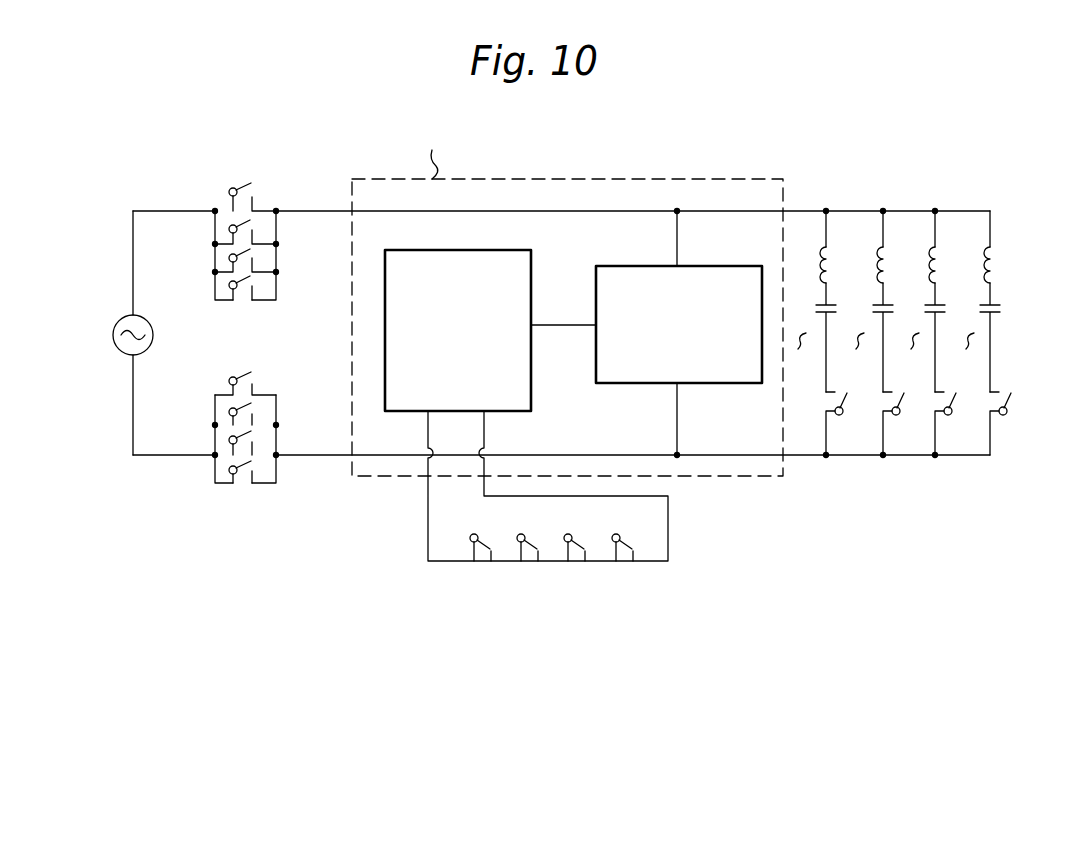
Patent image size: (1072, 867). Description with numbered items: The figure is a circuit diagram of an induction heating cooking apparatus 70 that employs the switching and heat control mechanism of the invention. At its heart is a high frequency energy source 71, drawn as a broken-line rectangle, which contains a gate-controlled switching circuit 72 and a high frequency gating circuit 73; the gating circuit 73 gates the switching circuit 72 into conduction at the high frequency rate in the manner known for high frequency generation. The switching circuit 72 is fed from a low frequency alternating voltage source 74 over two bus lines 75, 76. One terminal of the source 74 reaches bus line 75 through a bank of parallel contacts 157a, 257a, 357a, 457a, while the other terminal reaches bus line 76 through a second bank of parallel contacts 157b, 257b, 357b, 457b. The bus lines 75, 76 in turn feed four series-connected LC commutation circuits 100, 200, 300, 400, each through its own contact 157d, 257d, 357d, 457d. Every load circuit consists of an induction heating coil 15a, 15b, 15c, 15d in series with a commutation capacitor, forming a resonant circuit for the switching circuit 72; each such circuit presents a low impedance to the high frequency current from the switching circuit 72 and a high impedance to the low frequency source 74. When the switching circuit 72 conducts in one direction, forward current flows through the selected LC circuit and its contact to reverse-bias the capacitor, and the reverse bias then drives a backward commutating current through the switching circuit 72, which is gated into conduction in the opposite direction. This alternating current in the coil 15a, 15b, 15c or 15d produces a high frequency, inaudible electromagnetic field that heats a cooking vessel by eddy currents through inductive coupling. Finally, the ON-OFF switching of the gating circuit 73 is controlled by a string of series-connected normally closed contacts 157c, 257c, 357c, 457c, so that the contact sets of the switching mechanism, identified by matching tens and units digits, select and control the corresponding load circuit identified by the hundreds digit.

The induction heating apparatus 70 is at (301, 152).
The high frequency energy source 71 is at (704, 178).
The gate-controlled switching circuit 72 is at (700, 266).
The high frequency gating circuit 73 is at (531, 256).
The low frequency alternating voltage source 74 is at (154, 337).
The bus line 75 is at (306, 211).
The bus line 76 is at (352, 477).
The LC commutation circuit 100 is at (819, 331).
The LC commutation circuit 200 is at (879, 331).
The LC commutation circuit 300 is at (939, 331).
The LC commutation circuit 400 is at (999, 331).
The induction heating coil 15a is at (821, 272).
The induction heating coil 15b is at (878, 272).
The induction heating coil 15c is at (931, 272).
The induction heating coil 15d is at (986, 272).
The contact 157a is at (231, 187).
The contact 257a is at (228, 228).
The contact 357a is at (228, 255).
The contact 457a is at (228, 282).
The contact 157b is at (244, 376).
The contact 257b is at (241, 409).
The contact 357b is at (241, 438).
The contact 457b is at (241, 471).
The normally closed contact 157c is at (484, 549).
The normally closed contact 257c is at (531, 549).
The normally closed contact 357c is at (578, 549).
The normally closed contact 457c is at (626, 549).
The contact 157d is at (852, 408).
The contact 257d is at (909, 408).
The contact 357d is at (961, 408).
The contact 457d is at (1016, 408).